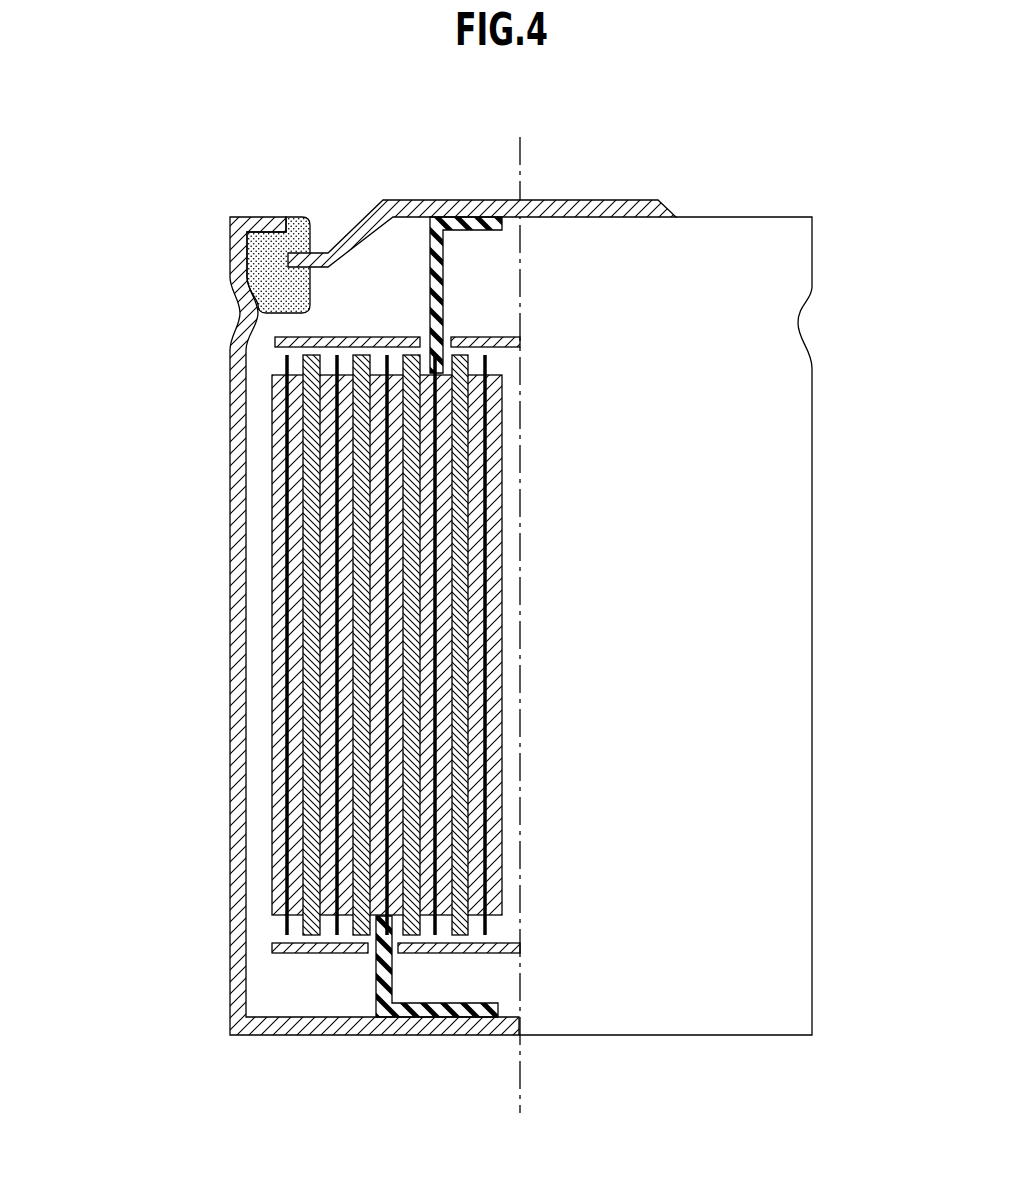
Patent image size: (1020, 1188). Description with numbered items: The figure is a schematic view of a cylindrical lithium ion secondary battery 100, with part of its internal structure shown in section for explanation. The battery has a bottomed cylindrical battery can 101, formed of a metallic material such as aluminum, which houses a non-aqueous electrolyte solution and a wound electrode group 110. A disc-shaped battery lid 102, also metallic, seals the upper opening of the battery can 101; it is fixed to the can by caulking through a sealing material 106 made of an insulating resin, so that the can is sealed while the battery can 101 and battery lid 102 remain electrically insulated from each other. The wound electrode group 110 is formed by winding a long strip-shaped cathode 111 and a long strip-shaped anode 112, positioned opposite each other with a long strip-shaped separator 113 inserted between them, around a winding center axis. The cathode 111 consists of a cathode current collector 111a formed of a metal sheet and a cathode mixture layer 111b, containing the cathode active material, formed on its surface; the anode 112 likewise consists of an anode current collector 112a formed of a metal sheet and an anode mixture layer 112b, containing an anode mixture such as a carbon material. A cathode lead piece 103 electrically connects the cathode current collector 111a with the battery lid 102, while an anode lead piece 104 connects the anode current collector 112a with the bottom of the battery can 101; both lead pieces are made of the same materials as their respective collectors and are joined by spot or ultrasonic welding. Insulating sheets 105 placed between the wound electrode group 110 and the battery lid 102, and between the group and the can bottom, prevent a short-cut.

The lithium ion secondary battery 100 is at (718, 158).
The battery can 101 is at (256, 220).
The battery lid 102 is at (350, 227).
The cathode lead piece 103 is at (427, 282).
The anode lead piece 104 is at (378, 966).
The insulating sheet 105 is at (275, 339).
The sealing material 106 is at (297, 228).
The wound electrode group 110 is at (281, 645).
The cathode 111 is at (256, 645).
The cathode current collector 111a is at (337, 573).
The cathode mixture layer 111b is at (328, 632).
The anode 112 is at (281, 645).
The anode current collector 112a is at (287, 364).
The anode mixture layer 112b is at (282, 428).
The separator 113 is at (308, 498).